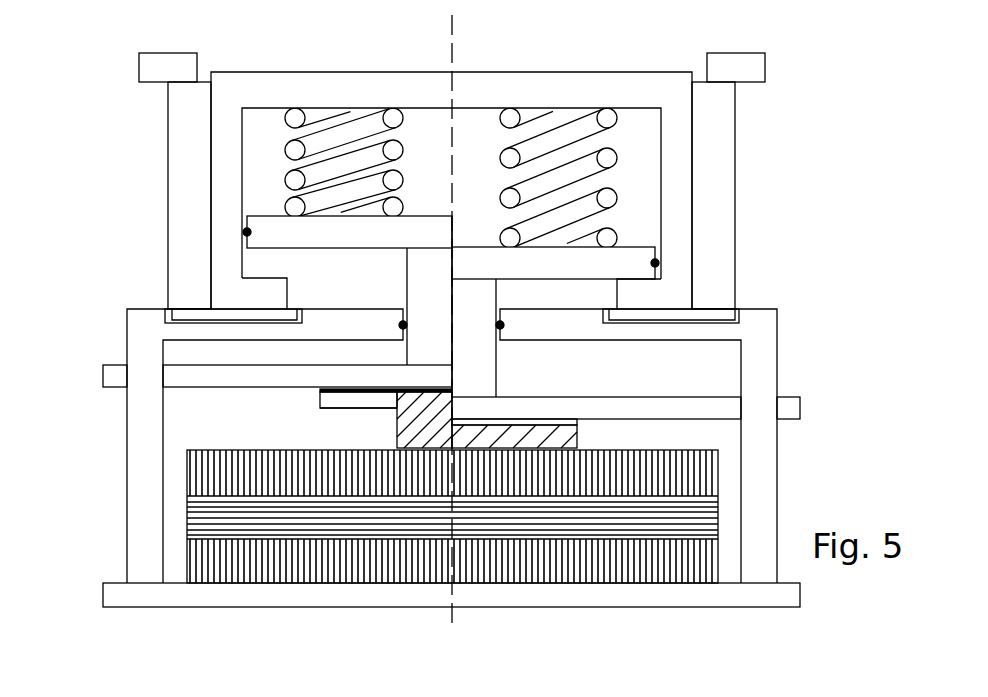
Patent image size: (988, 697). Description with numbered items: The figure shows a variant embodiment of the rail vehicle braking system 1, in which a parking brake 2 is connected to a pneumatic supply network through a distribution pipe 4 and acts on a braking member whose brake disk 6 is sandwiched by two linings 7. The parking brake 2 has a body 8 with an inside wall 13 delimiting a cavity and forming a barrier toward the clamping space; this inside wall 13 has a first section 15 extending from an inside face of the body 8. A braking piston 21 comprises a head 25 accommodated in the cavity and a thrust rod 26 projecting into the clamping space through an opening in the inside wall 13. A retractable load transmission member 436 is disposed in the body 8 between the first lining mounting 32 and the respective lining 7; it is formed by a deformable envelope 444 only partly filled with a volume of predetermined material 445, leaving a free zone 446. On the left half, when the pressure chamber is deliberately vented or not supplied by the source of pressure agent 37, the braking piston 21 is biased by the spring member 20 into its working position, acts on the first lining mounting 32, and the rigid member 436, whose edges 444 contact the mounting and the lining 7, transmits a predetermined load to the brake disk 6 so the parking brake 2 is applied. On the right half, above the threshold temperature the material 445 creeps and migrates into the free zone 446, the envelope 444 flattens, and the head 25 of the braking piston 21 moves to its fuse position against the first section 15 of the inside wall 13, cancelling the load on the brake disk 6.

The rail vehicle braking system 1 is at (396, 160).
The parking brake 2 is at (136, 282).
The distribution pipe 4 is at (168, 128).
The brake disk 6 is at (205, 519).
The lining 7 is at (205, 473).
The body 8 is at (282, 85).
The inside wall 13 is at (636, 307).
The first section 15 is at (637, 283).
The spring member 20 is at (348, 128).
The braking piston 21 is at (407, 262).
The head 25 is at (640, 258).
The thrust rod 26 is at (446, 305).
The first lining mounting 32 is at (187, 378).
The source of pressure agent 37 is at (139, 68).
The retractable load transmission member 436 is at (320, 391).
The deformable envelope 444 is at (320, 408).
The predetermined material 445 is at (530, 432).
The free zone 446 is at (360, 398).